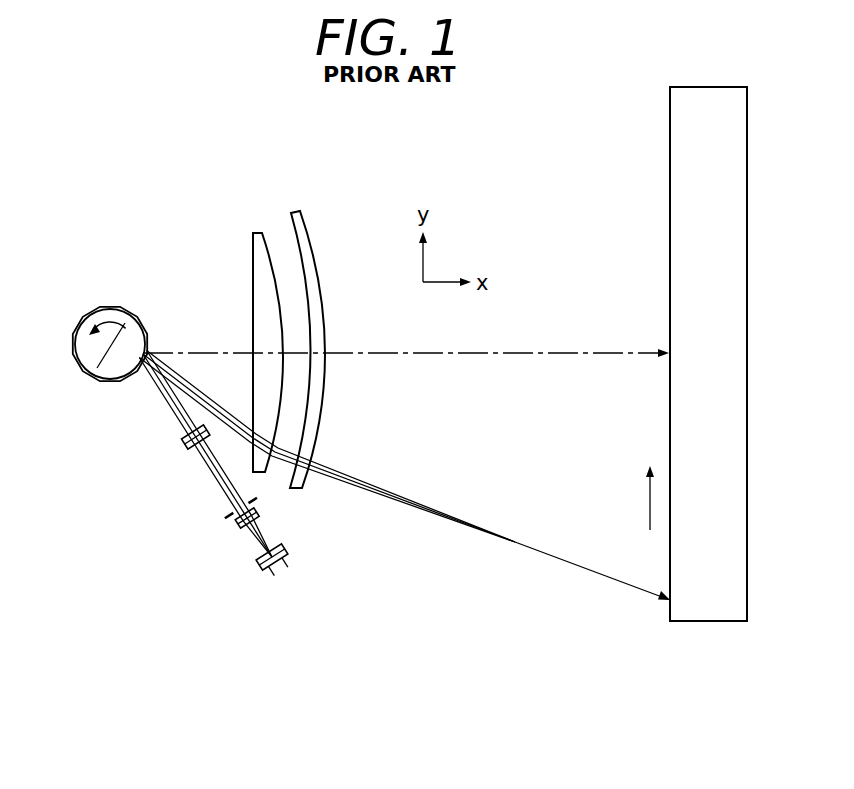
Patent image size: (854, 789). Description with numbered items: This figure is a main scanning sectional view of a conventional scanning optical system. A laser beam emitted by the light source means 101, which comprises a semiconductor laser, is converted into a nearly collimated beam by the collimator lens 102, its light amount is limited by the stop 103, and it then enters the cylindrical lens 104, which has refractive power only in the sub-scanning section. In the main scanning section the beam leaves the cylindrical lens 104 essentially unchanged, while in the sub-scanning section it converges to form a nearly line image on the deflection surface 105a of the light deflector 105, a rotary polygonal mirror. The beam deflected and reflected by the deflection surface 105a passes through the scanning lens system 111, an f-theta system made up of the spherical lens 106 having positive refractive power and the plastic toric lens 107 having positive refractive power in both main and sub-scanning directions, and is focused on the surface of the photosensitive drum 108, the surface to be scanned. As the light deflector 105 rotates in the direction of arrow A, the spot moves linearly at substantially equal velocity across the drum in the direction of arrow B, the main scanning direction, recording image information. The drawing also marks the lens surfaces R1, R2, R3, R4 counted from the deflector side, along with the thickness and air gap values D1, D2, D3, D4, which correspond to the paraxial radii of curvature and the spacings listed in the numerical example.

The light source means 101 is at (260, 568).
The collimator lens 102 is at (237, 526).
The stop 103 is at (226, 516).
The cylindrical lens 104 is at (186, 444).
The light deflector 105 is at (92, 355).
The deflection surface 105a is at (141, 362).
The spherical lens 106 is at (256, 232).
The toric lens 107 is at (293, 212).
The photosensitive drum 108 is at (669, 156).
The scanning lens system 111 is at (271, 298).
The arrow A is at (109, 312).
The arrow B is at (650, 500).
The first lens surface radius of curvature R1 is at (254, 262).
The second lens surface radius of curvature R2 is at (275, 248).
The third lens surface radius of curvature R3 is at (303, 245).
The fourth lens surface radius of curvature R4 is at (317, 262).
The first lens thickness D1 is at (258, 354).
The first air gap D2 is at (308, 372).
The second lens thickness D3 is at (322, 355).
The second air gap D4 is at (444, 354).